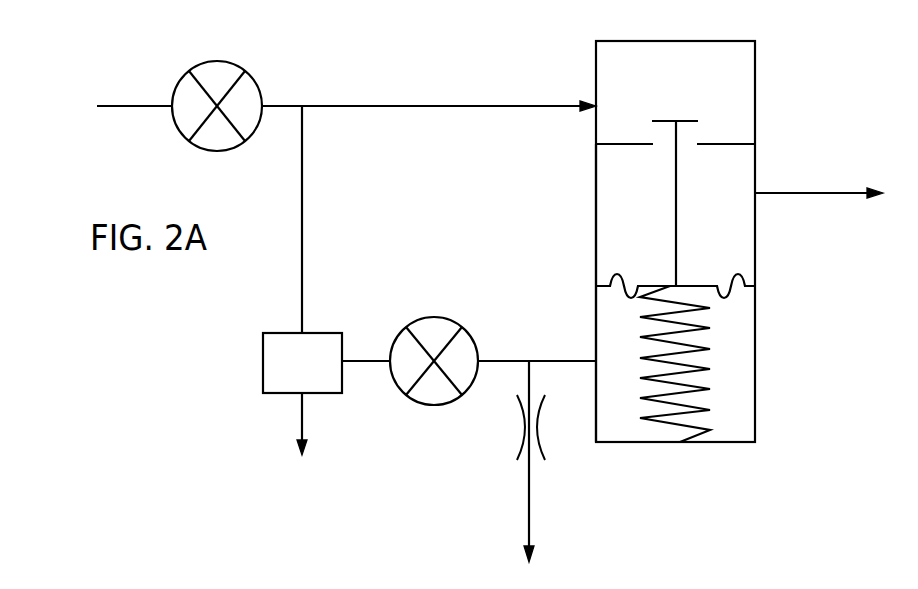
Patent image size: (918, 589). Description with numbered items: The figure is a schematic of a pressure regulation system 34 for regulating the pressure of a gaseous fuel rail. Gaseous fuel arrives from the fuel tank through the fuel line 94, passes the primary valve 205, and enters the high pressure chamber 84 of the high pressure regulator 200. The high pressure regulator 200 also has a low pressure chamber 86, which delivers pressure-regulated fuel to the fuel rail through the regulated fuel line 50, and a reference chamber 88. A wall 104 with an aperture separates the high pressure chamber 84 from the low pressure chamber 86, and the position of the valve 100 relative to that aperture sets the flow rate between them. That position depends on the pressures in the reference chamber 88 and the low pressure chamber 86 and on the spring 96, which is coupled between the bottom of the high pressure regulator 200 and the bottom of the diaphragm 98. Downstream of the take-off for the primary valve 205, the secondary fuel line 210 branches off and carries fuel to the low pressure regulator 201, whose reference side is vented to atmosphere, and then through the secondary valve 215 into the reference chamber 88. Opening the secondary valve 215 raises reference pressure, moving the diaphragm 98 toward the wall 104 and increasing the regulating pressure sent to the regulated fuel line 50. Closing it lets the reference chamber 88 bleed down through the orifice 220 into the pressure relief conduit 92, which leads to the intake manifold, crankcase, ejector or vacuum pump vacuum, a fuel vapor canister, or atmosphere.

The pressure regulation system 34 is at (471, 70).
The regulated fuel line 50 is at (780, 193).
The high pressure chamber 84 is at (685, 85).
The low pressure chamber 86 is at (650, 228).
The reference chamber 88 is at (628, 366).
The pressure relief conduit 92 is at (530, 495).
The fuel line 94 is at (123, 106).
The spring 96 is at (675, 427).
The diaphragm 98 is at (688, 283).
The valve 100 is at (680, 120).
The wall 104 is at (637, 146).
The high pressure regulator 200 is at (713, 40).
The low pressure regulator 201 is at (317, 371).
The primary valve 205 is at (228, 62).
The secondary fuel line 210 is at (302, 190).
The secondary valve 215 is at (432, 318).
The orifice 220 is at (522, 420).